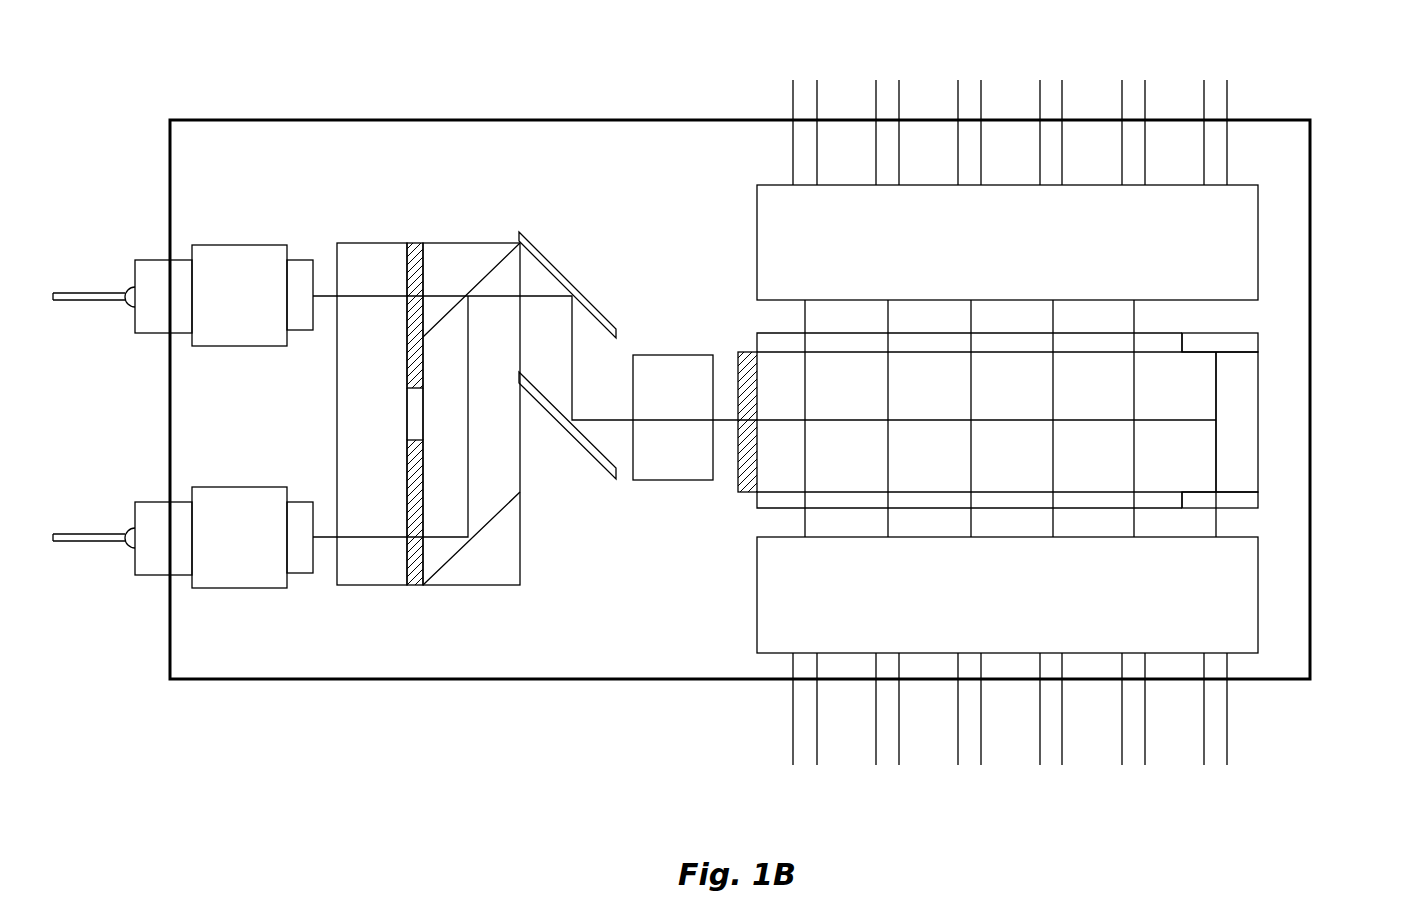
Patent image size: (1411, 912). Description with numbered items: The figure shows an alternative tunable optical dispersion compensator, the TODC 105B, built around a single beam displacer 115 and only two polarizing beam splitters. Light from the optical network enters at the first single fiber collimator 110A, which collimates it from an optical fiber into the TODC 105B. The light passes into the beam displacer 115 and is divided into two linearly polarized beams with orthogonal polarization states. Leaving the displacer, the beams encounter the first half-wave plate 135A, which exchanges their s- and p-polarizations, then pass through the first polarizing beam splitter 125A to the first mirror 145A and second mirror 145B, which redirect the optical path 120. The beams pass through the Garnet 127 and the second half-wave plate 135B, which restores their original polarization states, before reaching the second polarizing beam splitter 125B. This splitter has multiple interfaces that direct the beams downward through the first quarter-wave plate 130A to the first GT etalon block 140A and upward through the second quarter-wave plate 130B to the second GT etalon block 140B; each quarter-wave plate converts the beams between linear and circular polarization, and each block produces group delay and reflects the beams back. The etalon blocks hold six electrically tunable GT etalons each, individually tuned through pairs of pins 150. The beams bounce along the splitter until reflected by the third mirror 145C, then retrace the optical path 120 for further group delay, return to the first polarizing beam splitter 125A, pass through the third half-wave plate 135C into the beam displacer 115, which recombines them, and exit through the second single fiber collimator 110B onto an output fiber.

The tunable optical dispersion compensator 105B is at (128, 134).
The first single fiber collimator 110A is at (183, 295).
The second single fiber collimator 110B is at (183, 537).
The beam displacer 115 is at (372, 414).
The optical path 120 is at (321, 284).
The first polarizing beam splitter 125A is at (471, 414).
The second polarizing beam splitter 125B is at (1240, 455).
The Garnet 127 is at (673, 417).
The first quarter-wave plate 130A is at (755, 510).
The second quarter-wave plate 130B is at (766, 330).
The first half-wave plate 135A is at (415, 248).
The second half-wave plate 135B is at (744, 346).
The third half-wave plate 135C is at (415, 590).
The first GT etalon block 140A is at (1007, 595).
The second GT etalon block 140B is at (1007, 242).
The first mirror 145A is at (568, 262).
The second mirror 145B is at (561, 444).
The third mirror 145C is at (1240, 343).
The pins 150 is at (790, 89).